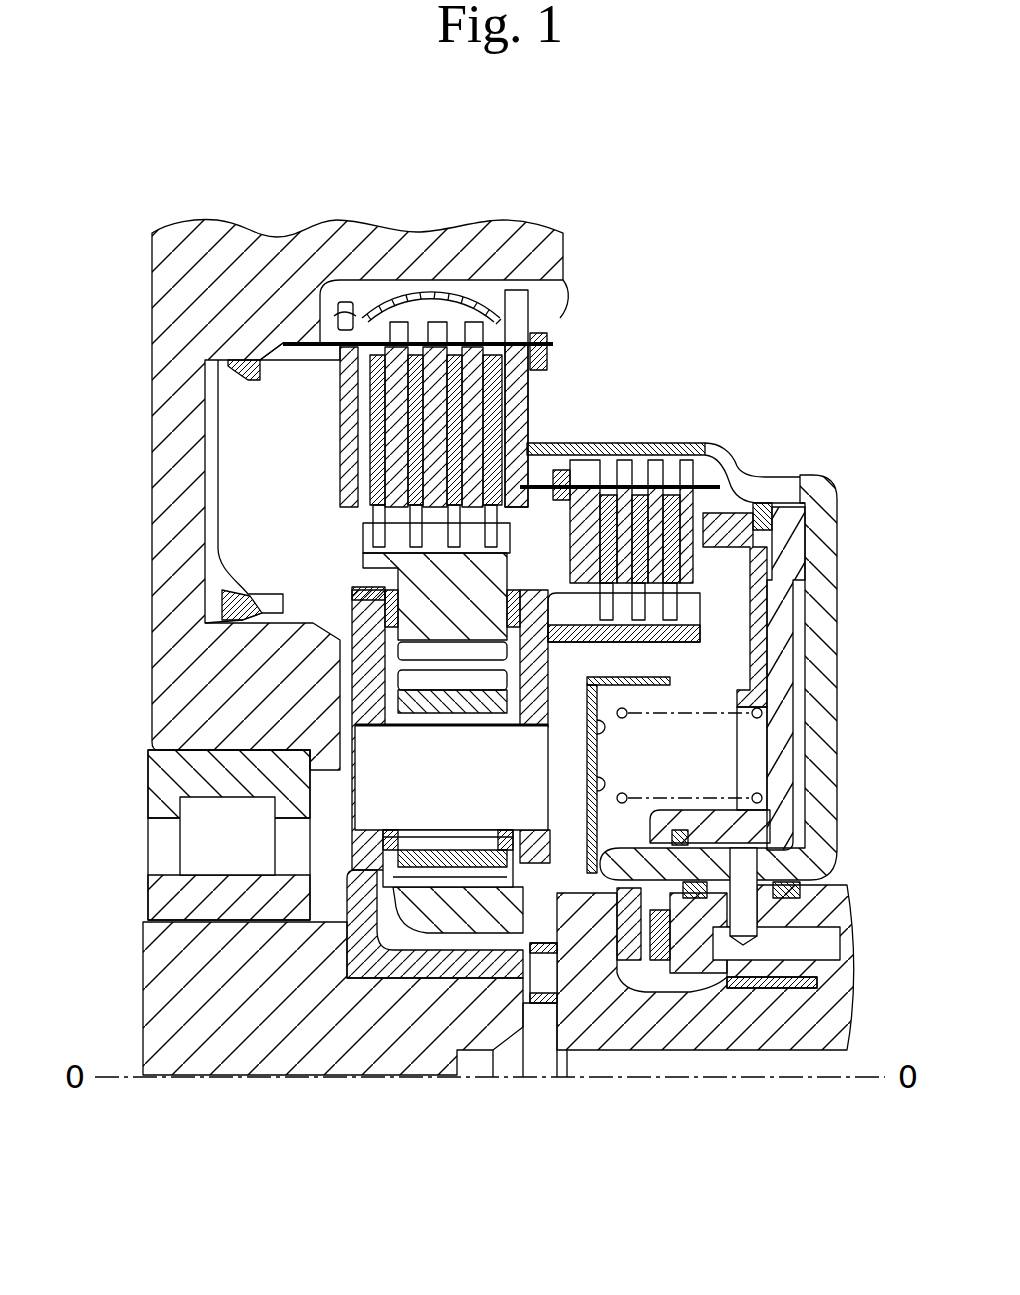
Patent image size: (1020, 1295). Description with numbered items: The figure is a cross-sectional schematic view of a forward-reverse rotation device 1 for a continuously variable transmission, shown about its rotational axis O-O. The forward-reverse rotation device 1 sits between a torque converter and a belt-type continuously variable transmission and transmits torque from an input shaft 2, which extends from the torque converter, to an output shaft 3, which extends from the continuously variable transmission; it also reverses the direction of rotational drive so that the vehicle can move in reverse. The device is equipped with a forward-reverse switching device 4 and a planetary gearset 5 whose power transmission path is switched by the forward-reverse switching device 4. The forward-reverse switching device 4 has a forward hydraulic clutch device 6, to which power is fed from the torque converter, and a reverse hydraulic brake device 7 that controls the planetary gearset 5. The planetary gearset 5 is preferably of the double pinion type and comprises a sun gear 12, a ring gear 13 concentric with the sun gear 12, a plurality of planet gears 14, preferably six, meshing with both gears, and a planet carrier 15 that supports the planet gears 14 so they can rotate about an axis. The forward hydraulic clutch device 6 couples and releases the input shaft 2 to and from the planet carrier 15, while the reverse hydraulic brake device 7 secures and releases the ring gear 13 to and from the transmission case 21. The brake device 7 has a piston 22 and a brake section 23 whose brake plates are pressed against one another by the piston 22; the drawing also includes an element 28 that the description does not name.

The forward-reverse rotation device 1 is at (712, 300).
The input shaft 2 is at (790, 1030).
The output shaft 3 is at (273, 1010).
The forward-reverse switching device 4 is at (731, 386).
The planetary gearset 5 is at (354, 711).
The forward hydraulic clutch device 6 is at (699, 464).
The reverse hydraulic brake device 7 is at (346, 298).
The sun gear 12 is at (450, 877).
The ring gear 13 is at (472, 575).
The planet gears 14 is at (385, 855).
The planet carrier 15 is at (353, 840).
The transmission case 21 is at (184, 258).
The piston 22 is at (205, 433).
The brake section 23 is at (332, 487).
The spring 28 is at (429, 298).